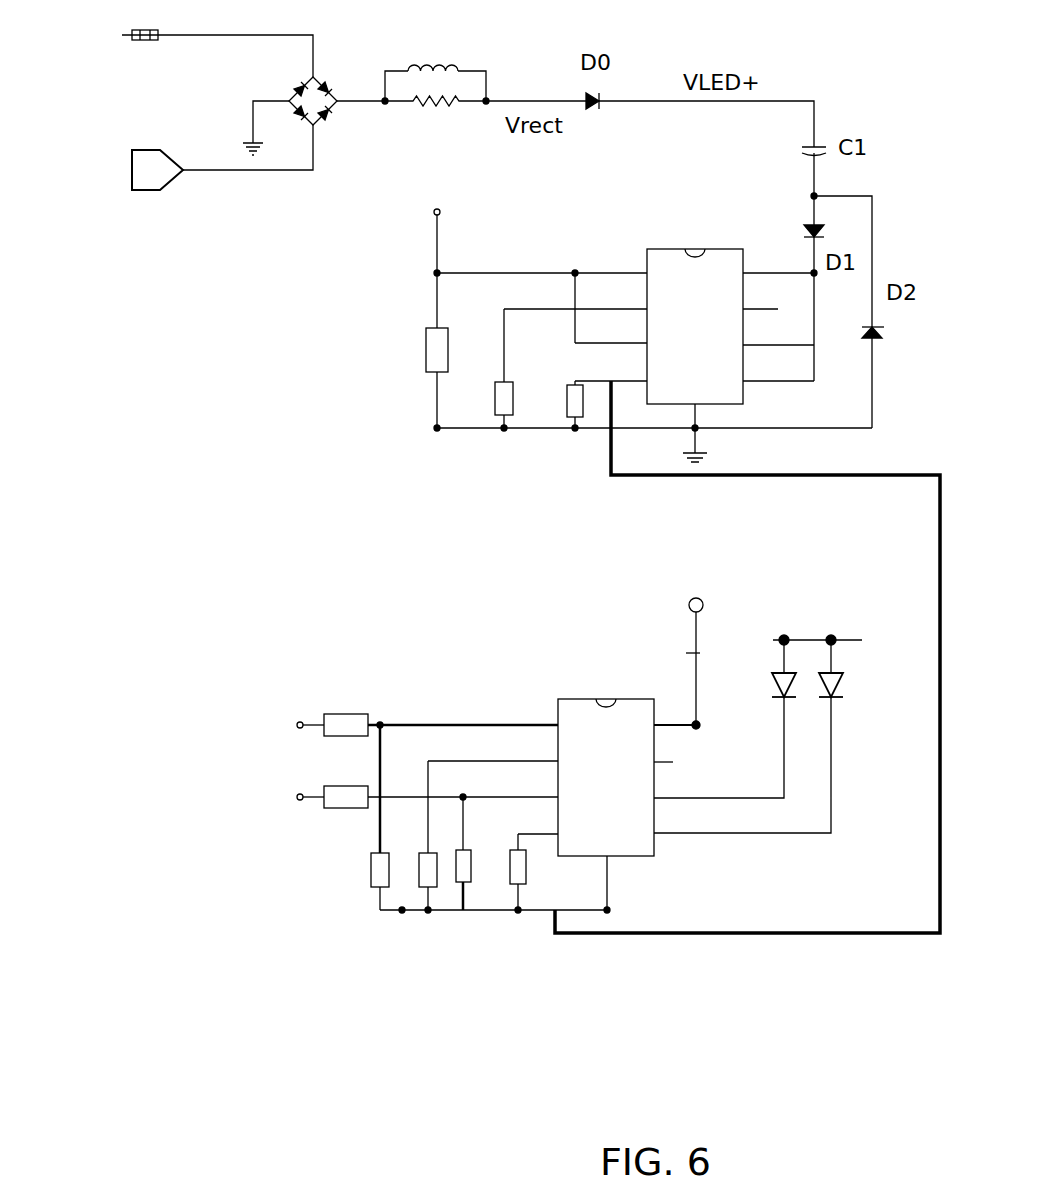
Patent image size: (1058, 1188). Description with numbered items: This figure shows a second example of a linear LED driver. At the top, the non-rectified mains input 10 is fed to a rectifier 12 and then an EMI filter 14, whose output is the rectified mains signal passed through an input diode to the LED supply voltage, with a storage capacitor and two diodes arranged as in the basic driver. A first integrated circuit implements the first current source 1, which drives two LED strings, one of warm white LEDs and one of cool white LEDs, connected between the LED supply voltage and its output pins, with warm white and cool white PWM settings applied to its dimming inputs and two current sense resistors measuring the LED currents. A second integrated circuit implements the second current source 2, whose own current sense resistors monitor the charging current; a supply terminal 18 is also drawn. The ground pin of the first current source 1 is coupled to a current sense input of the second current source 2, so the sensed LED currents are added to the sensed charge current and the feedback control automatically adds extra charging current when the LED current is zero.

The non-rectified mains input 10 is at (108, 32).
The rectifier 12 is at (334, 70).
The EMI filter 14 is at (480, 54).
The 3.3V auxiliary supply terminal 18 is at (432, 212).
The second current source 2 is at (646, 205).
The first current source 1 is at (573, 655).